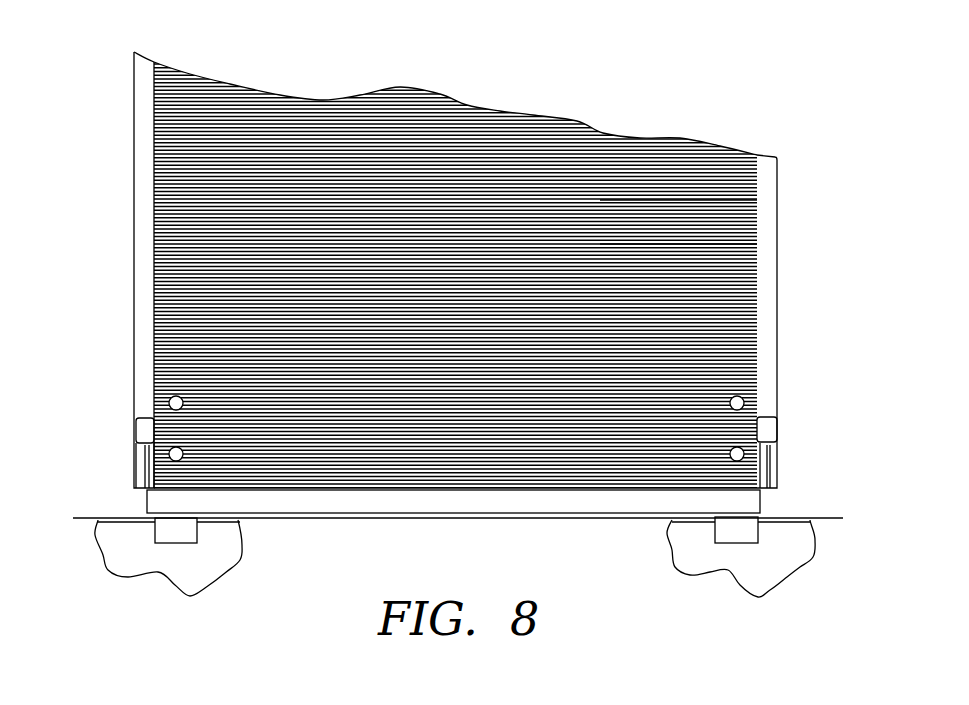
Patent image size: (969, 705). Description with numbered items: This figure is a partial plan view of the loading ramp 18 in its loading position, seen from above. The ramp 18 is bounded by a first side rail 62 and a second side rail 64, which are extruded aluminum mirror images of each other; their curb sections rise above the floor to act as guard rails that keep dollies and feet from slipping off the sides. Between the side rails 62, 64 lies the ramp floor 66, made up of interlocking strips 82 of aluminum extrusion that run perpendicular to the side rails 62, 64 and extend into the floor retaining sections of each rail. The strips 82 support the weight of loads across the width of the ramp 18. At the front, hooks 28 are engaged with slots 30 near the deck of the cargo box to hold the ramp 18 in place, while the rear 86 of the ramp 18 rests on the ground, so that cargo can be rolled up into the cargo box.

The loading ramp 18 is at (597, 145).
The hooks 28 is at (178, 532).
The slots 30 is at (150, 513).
The first side rail 62 is at (764, 152).
The second side rail 64 is at (145, 67).
The ramp floor 66 is at (472, 113).
The interlocking strips 82 is at (732, 207).
The rear 86 is at (521, 505).